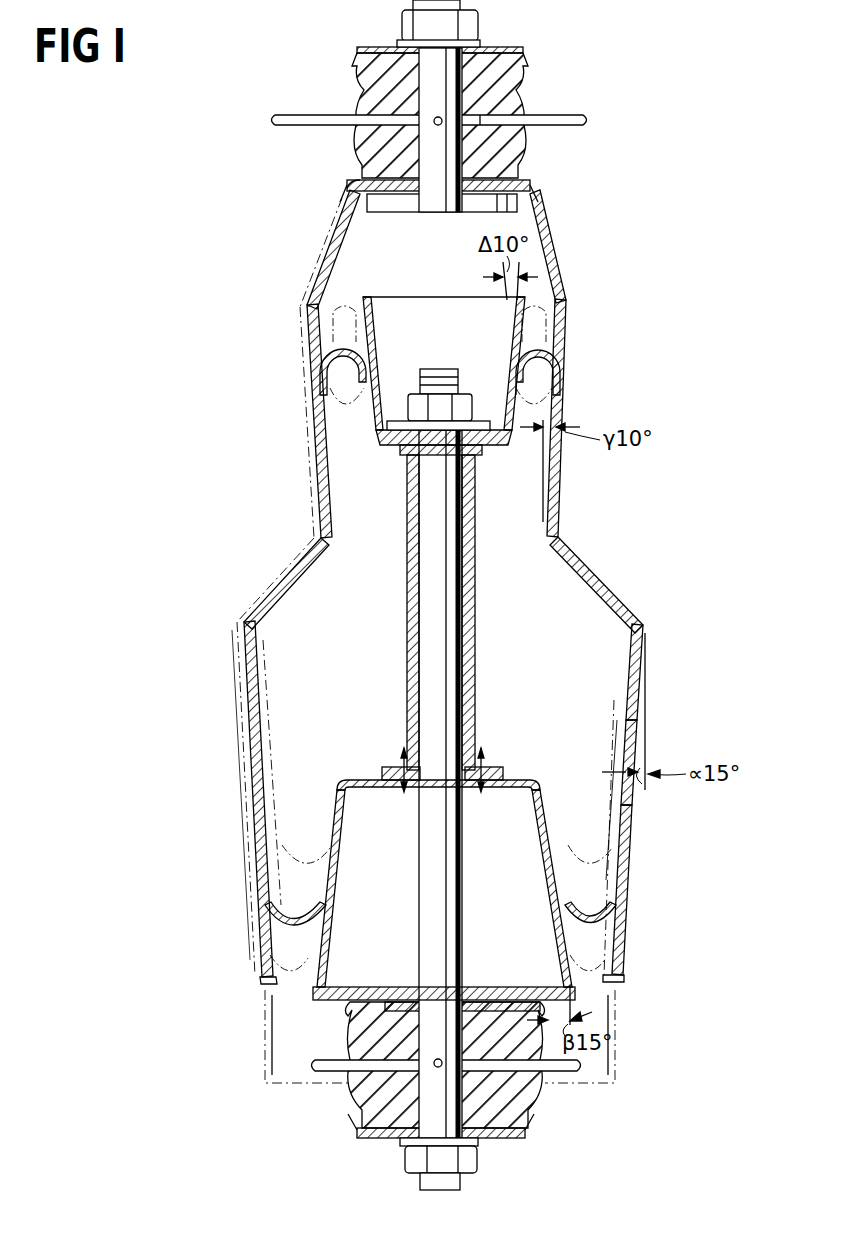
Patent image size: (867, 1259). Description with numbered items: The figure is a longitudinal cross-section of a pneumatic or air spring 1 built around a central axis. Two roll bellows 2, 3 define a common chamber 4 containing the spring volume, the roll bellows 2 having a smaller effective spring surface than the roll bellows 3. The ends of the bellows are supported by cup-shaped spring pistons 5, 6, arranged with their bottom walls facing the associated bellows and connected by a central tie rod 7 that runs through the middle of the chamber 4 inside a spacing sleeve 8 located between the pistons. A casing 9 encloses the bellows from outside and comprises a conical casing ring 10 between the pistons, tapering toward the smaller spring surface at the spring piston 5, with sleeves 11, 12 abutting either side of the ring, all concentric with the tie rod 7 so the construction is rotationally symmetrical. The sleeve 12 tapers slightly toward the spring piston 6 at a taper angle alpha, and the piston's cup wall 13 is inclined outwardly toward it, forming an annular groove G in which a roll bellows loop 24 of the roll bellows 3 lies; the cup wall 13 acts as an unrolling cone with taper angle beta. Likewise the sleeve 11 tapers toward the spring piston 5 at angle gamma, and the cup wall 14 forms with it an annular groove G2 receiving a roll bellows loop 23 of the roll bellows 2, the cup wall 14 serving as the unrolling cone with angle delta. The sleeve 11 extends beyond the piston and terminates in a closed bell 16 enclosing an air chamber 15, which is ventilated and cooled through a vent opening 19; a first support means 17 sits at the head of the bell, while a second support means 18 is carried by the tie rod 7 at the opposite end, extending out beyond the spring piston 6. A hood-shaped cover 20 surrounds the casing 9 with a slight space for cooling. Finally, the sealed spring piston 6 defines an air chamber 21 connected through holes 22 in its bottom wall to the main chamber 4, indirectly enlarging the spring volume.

The pneumatic spring 1 is at (463, 582).
The roll bellows 2 is at (560, 412).
The roll bellows 3 is at (632, 752).
The chamber 4 is at (604, 628).
The spring piston 5 is at (444, 340).
The spring piston 6 is at (444, 874).
The central tie rod 7 is at (462, 548).
The spacing sleeve 8 is at (470, 606).
The casing 9 is at (558, 490).
The casing ring 10 is at (604, 582).
The sleeve 11 is at (560, 366).
The sleeve 12 is at (628, 805).
The cup wall 13 is at (324, 910).
The cup wall 14 is at (374, 345).
The air chamber 15 is at (444, 340).
The bell 16 is at (548, 262).
The spring support means 17 is at (528, 74).
The second support means 18 is at (356, 1086).
The vent opening 19 is at (342, 220).
The hood-shaped cover 20 is at (326, 250).
The air chamber 21 is at (520, 924).
The holes 22 is at (404, 800).
The roll bellows loop 23 is at (332, 352).
The roll bellows loop 24 is at (614, 920).
The annular groove G is at (595, 978).
The annular groove G2 is at (343, 300).